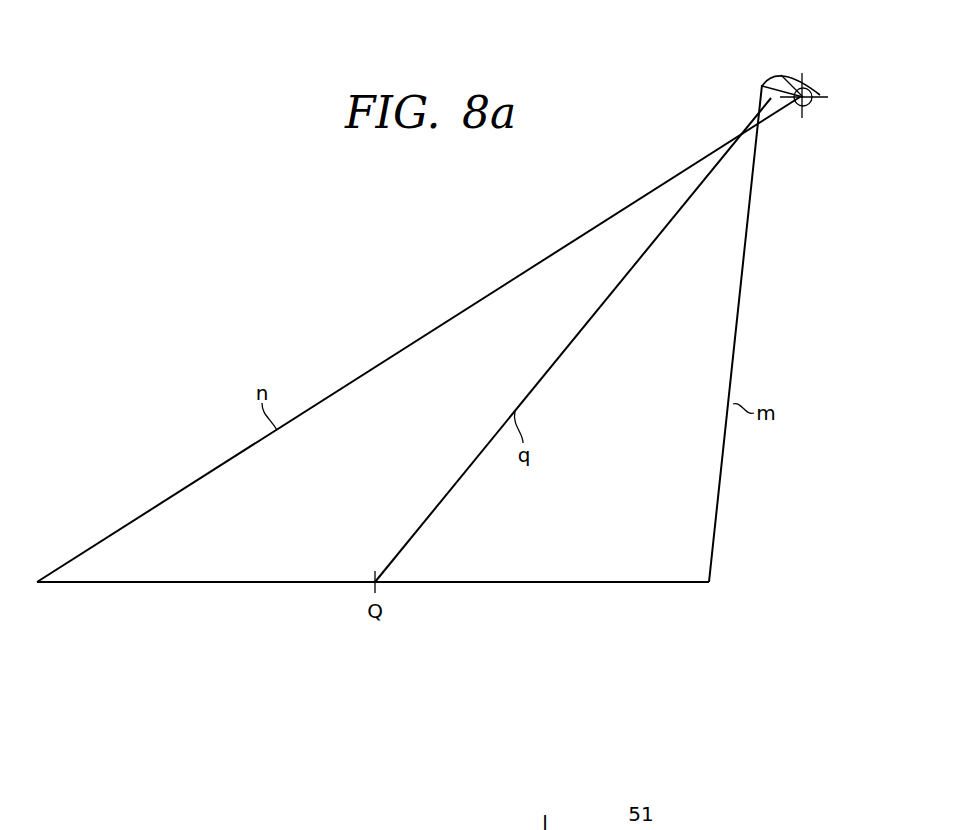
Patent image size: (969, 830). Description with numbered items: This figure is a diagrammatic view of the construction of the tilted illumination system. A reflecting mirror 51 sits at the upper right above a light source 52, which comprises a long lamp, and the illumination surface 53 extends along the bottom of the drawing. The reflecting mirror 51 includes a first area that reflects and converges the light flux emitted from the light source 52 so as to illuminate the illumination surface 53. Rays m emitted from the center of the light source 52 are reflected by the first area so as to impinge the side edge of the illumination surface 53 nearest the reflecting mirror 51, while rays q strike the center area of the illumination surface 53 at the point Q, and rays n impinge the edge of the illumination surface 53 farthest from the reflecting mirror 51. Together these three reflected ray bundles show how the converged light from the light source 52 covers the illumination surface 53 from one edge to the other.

The reflecting mirror 51 is at (783, 63).
The light source 52 is at (812, 107).
The illumination surface 53 is at (577, 598).